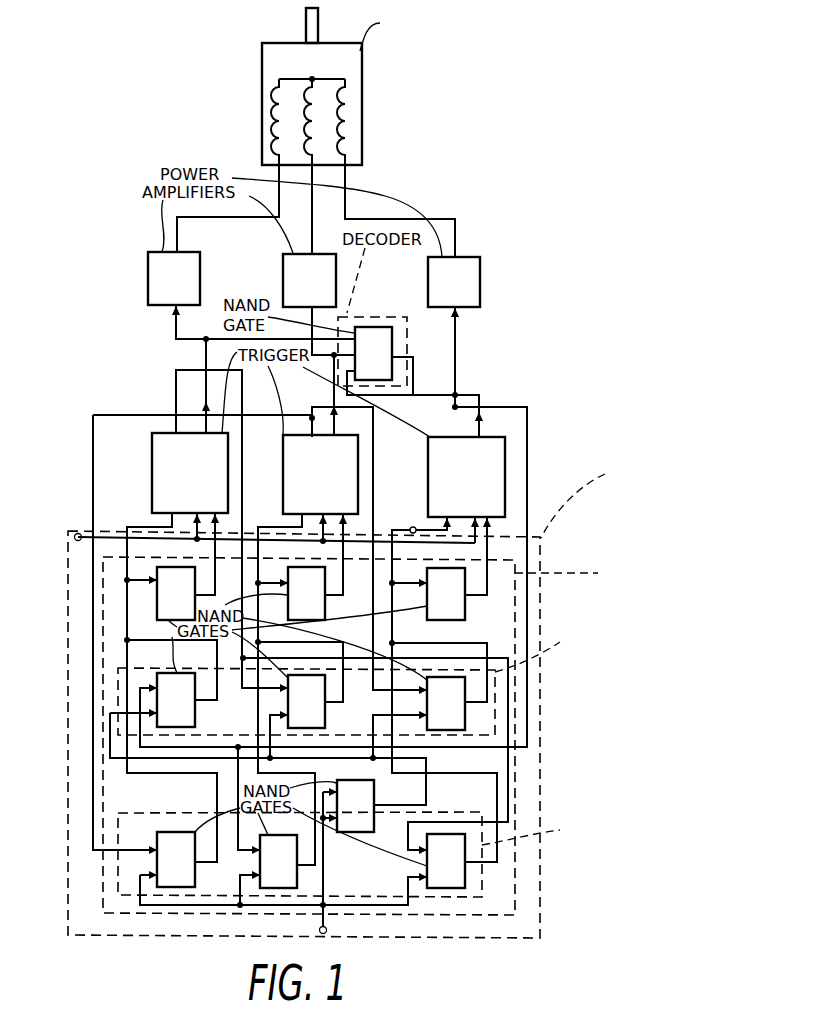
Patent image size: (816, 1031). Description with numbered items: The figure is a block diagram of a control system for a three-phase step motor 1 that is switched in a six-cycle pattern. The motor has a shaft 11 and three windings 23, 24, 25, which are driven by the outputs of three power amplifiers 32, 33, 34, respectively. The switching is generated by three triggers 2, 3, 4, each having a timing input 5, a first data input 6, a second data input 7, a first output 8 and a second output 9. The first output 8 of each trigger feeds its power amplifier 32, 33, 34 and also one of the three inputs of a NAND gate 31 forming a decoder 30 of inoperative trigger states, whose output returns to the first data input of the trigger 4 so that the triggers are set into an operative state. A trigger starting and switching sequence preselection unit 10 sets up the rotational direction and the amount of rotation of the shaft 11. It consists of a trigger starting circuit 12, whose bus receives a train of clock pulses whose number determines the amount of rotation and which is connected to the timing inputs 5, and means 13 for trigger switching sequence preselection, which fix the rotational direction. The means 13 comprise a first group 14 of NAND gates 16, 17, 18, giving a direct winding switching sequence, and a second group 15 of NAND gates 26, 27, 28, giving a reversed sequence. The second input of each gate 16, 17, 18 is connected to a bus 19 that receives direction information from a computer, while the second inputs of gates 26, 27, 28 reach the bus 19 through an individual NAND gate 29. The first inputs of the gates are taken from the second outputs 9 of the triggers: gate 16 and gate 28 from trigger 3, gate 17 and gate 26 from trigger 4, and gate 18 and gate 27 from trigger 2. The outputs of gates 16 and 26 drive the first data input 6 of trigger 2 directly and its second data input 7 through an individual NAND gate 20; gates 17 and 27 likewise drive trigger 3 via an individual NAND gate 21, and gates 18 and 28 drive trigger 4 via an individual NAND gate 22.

The three-phase step motor 1 is at (332, 131).
The shaft 11 is at (319, 26).
The winding 23 is at (270, 128).
The winding 24 is at (303, 128).
The winding 25 is at (348, 128).
The power amplifier 32 is at (174, 278).
The power amplifier 33 is at (309, 280).
The power amplifier 34 is at (454, 282).
The decoder of inoperative states of triggers 30 is at (377, 314).
The NAND gate 31 is at (373, 353).
The trigger 2 is at (190, 473).
The trigger 3 is at (320, 474).
The trigger 4 is at (466, 477).
The timing input 5 is at (196, 532).
The first data input 6 is at (168, 525).
The second data input 7 is at (226, 522).
The first output 8 is at (207, 423).
The second output 9 is at (172, 422).
The trigger starting and switching sequence preselection unit 10 is at (545, 556).
The trigger starting circuit 12 is at (77, 533).
The means for trigger switching sequence preselection 13 is at (524, 598).
The first group of NAND gates 14 is at (466, 806).
The second group of NAND gates 15 is at (504, 689).
The NAND gate 16 is at (176, 859).
The NAND gate 17 is at (278, 861).
The NAND gate 18 is at (446, 861).
The bus for setting up the rotational direction 19 is at (327, 924).
The individual NAND gate 20 is at (176, 593).
The individual NAND gate 21 is at (306, 593).
The individual NAND gate 22 is at (446, 594).
The NAND gate 26 is at (176, 700).
The NAND gate 27 is at (306, 701).
The NAND gate 28 is at (446, 703).
The individual NAND gate 29 is at (355, 806).